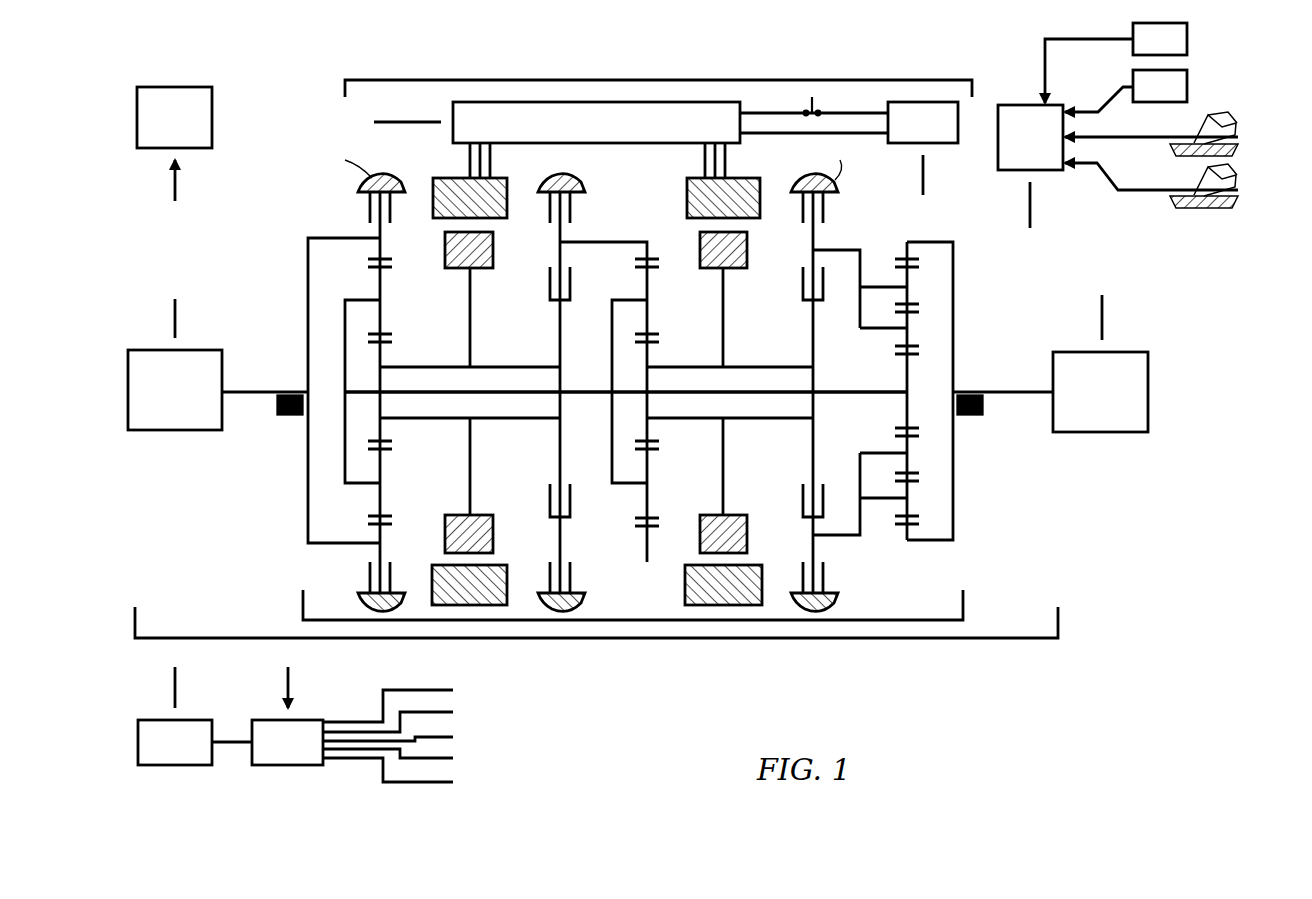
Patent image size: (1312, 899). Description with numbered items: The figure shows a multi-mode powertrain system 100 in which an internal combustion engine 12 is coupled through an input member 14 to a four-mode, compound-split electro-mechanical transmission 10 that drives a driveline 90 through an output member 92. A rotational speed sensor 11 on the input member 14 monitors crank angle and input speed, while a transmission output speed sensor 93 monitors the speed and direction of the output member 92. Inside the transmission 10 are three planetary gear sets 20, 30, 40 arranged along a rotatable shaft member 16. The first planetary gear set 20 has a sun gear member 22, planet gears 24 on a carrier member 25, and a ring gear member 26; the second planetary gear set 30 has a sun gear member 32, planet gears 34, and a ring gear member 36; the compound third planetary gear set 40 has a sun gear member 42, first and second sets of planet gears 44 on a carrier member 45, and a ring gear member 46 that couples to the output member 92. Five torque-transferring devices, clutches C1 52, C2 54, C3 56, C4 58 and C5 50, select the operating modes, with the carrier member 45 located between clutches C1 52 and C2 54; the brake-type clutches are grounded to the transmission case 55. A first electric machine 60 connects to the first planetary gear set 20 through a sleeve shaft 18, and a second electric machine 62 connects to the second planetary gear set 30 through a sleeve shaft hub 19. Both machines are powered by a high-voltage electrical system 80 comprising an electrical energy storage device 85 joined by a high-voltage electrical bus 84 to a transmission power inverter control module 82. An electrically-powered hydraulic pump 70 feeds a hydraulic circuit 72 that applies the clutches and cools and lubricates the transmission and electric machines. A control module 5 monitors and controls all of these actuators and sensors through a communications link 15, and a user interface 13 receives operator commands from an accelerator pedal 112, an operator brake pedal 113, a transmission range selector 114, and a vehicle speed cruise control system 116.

The control module 5 is at (174, 117).
The transmission 10 is at (754, 620).
The rotational speed sensor 11 is at (288, 415).
The internal combustion engine 12 is at (175, 390).
The user interface 13 is at (1030, 137).
The input member 14 is at (258, 395).
The communications link 15 is at (622, 403).
The rotatable shaft member 16 is at (570, 392).
The sleeve shaft 18 is at (508, 365).
The sleeve shaft hub 19 is at (768, 365).
The first planetary gear set 20 is at (395, 434).
The sun gear member 22 is at (382, 348).
The planet gears 24 is at (382, 300).
The carrier member 25 is at (345, 365).
The ring gear member 26 is at (383, 263).
The second planetary gear set 30 is at (655, 480).
The sun gear member 32 is at (650, 348).
The planet gears 34 is at (650, 300).
The ring gear member 36 is at (648, 263).
The third planetary gear set 40 is at (895, 380).
The sun gear member 42 is at (912, 425).
The planet gears 44 is at (912, 455).
The carrier member 45 is at (862, 262).
The ring gear member 46 is at (905, 530).
The clutch C5 50 is at (368, 212).
The clutch C1 52 is at (826, 210).
The clutch C2 54 is at (800, 290).
The transmission case 55 is at (593, 156).
The clutch C3 56 is at (572, 210).
The clutch C4 58 is at (548, 290).
The first electric machine 60 is at (490, 225).
The second electric machine 62 is at (742, 225).
The hydraulic pump 70 is at (195, 742).
The hydraulic circuit 72 is at (287, 742).
The high-voltage electrical system 80 is at (665, 80).
The transmission power inverter control module 82 is at (670, 140).
The high-voltage electrical bus 84 is at (845, 113).
The electrical energy storage device 85 is at (923, 122).
The driveline 90 is at (1100, 392).
The output member 92 is at (1008, 392).
The transmission output speed sensor 93 is at (983, 405).
The powertrain system 100 is at (667, 640).
The accelerator pedal 112 is at (1192, 188).
The operator brake pedal 113 is at (1192, 135).
The transmission range selector 114 is at (1126, 91).
The vehicle speed cruise control system 116 is at (1116, 63).